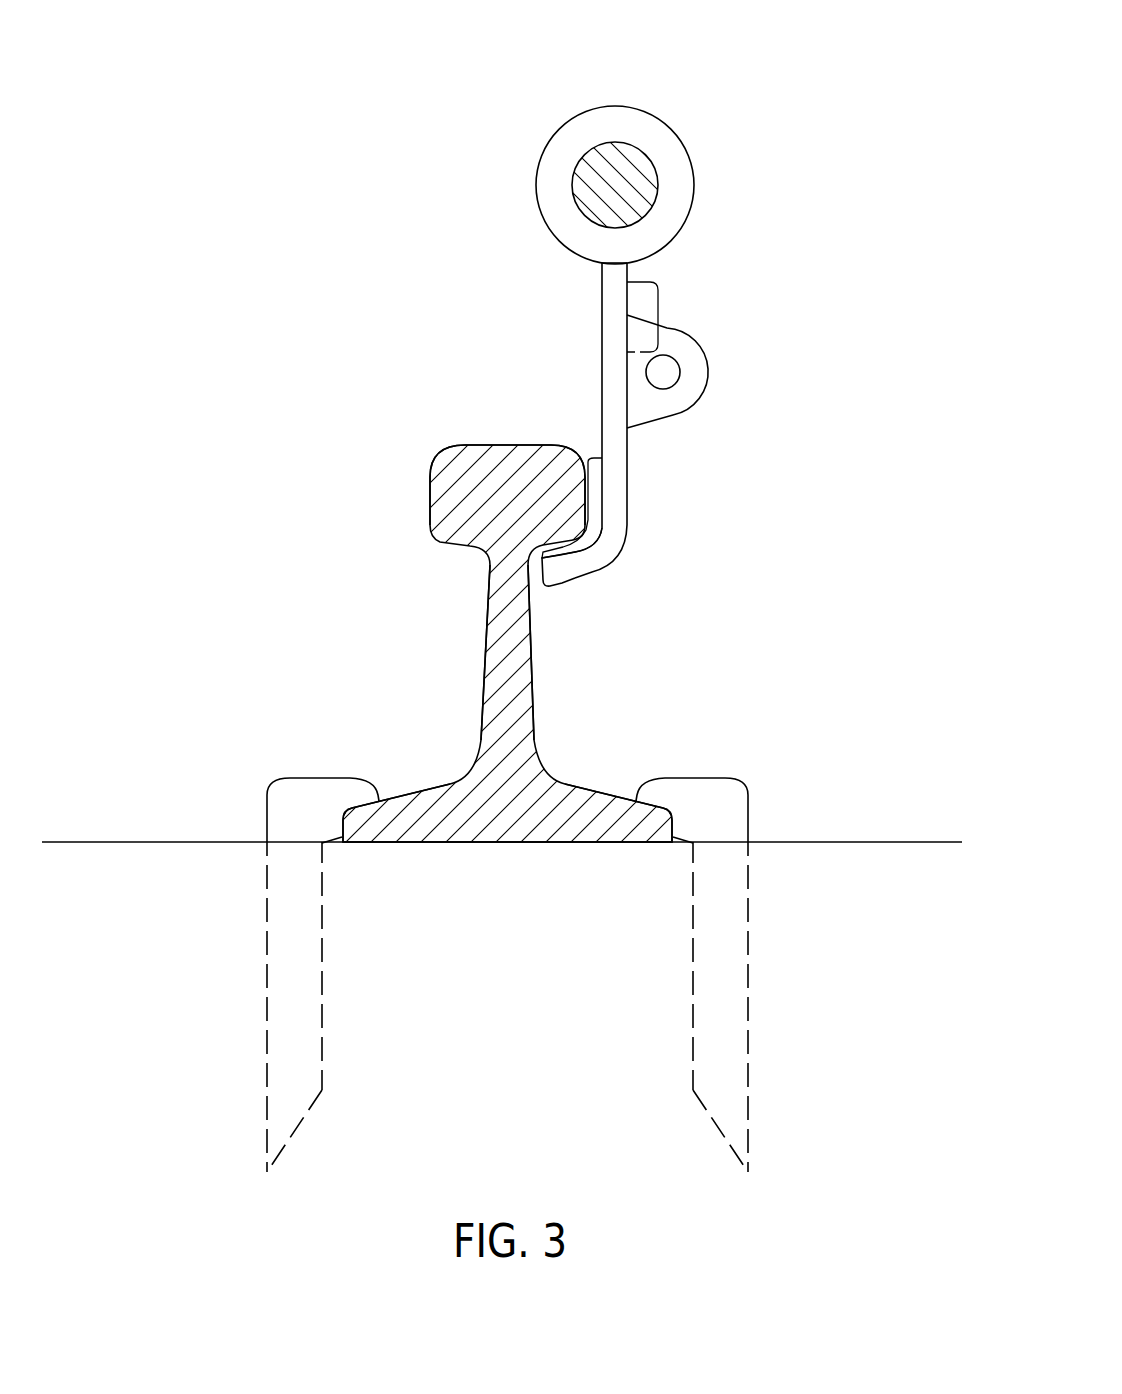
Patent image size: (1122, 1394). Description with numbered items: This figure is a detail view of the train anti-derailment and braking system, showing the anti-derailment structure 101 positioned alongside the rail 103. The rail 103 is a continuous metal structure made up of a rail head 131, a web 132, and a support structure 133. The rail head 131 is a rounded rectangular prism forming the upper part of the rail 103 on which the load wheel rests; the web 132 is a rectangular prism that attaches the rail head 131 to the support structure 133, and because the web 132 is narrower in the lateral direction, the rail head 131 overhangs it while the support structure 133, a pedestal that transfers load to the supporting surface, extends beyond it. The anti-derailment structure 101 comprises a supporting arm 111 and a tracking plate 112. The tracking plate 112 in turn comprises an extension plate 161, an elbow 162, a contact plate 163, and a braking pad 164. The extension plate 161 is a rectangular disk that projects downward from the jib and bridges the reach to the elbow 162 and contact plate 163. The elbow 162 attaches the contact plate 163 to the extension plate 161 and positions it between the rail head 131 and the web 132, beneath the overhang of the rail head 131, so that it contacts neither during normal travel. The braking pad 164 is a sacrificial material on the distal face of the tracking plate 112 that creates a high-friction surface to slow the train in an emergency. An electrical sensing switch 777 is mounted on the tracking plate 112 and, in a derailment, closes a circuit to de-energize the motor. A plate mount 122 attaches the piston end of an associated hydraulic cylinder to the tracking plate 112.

The anti-derailment structure 101 is at (380, 155).
The rail 103 is at (432, 448).
The supporting arm 111 is at (657, 120).
The tracking plate 112 is at (627, 275).
The plate mount 122 is at (703, 358).
The rail head 131 is at (450, 503).
The web 132 is at (487, 668).
The support structure 133 is at (452, 812).
The extension plate 161 is at (602, 318).
The elbow 162 is at (616, 543).
The contact plate 163 is at (561, 583).
The braking pad 164 is at (593, 460).
The electrical sensing switch 777 is at (643, 313).